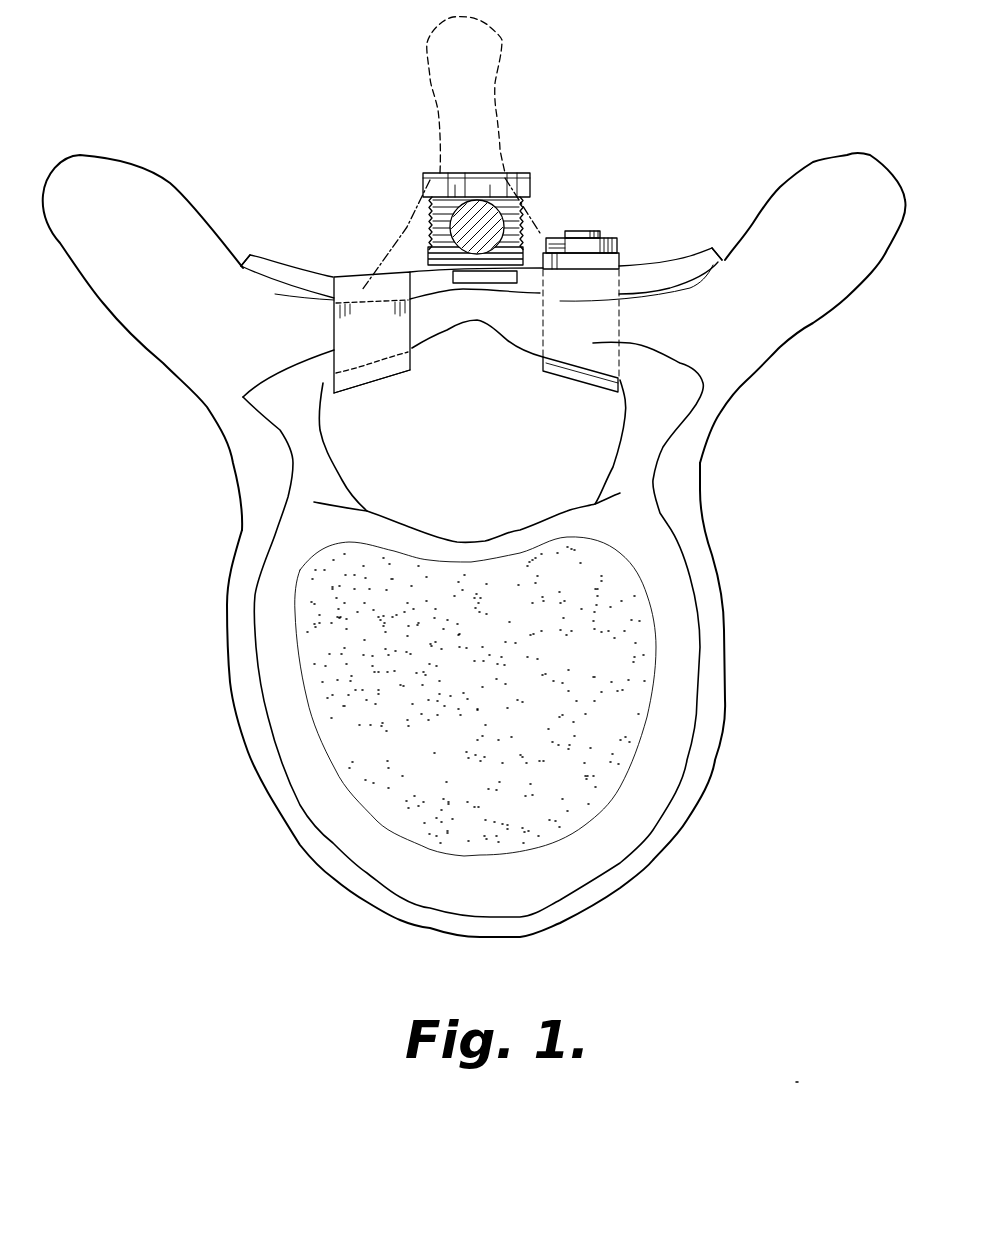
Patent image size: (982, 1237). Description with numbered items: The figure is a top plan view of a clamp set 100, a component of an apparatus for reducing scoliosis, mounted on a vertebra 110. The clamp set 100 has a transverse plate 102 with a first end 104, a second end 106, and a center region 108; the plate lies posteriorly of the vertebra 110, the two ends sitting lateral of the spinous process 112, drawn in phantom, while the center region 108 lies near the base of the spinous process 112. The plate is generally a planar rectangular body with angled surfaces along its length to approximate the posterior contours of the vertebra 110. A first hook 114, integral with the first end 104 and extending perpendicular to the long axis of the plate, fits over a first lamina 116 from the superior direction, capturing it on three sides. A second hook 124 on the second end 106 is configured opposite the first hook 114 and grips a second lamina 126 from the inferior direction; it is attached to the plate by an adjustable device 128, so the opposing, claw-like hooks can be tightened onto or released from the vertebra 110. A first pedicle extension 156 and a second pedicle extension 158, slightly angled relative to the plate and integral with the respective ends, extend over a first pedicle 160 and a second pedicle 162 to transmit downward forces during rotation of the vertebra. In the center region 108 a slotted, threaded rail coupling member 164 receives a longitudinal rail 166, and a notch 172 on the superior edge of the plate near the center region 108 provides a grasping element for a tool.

The clamp set 100 is at (501, 270).
The transverse plate 102 is at (466, 205).
The first end 104 is at (348, 290).
The second end 106 is at (606, 285).
The center region 108 is at (501, 329).
The vertebra 110 is at (733, 620).
The spinous process 112 is at (498, 40).
The first hook 114 is at (337, 330).
The first lamina 116 is at (415, 350).
The second hook 124 is at (620, 256).
The second lamina 126 is at (535, 347).
The adjustable device 128 is at (607, 233).
The first pedicle extension 156 is at (283, 268).
The second pedicle extension 158 is at (715, 248).
The first pedicle 160 is at (242, 432).
The second pedicle 162 is at (693, 447).
The rail coupling member 164 is at (528, 187).
The longitudinal rail 166 is at (473, 228).
The notch 172 is at (467, 281).